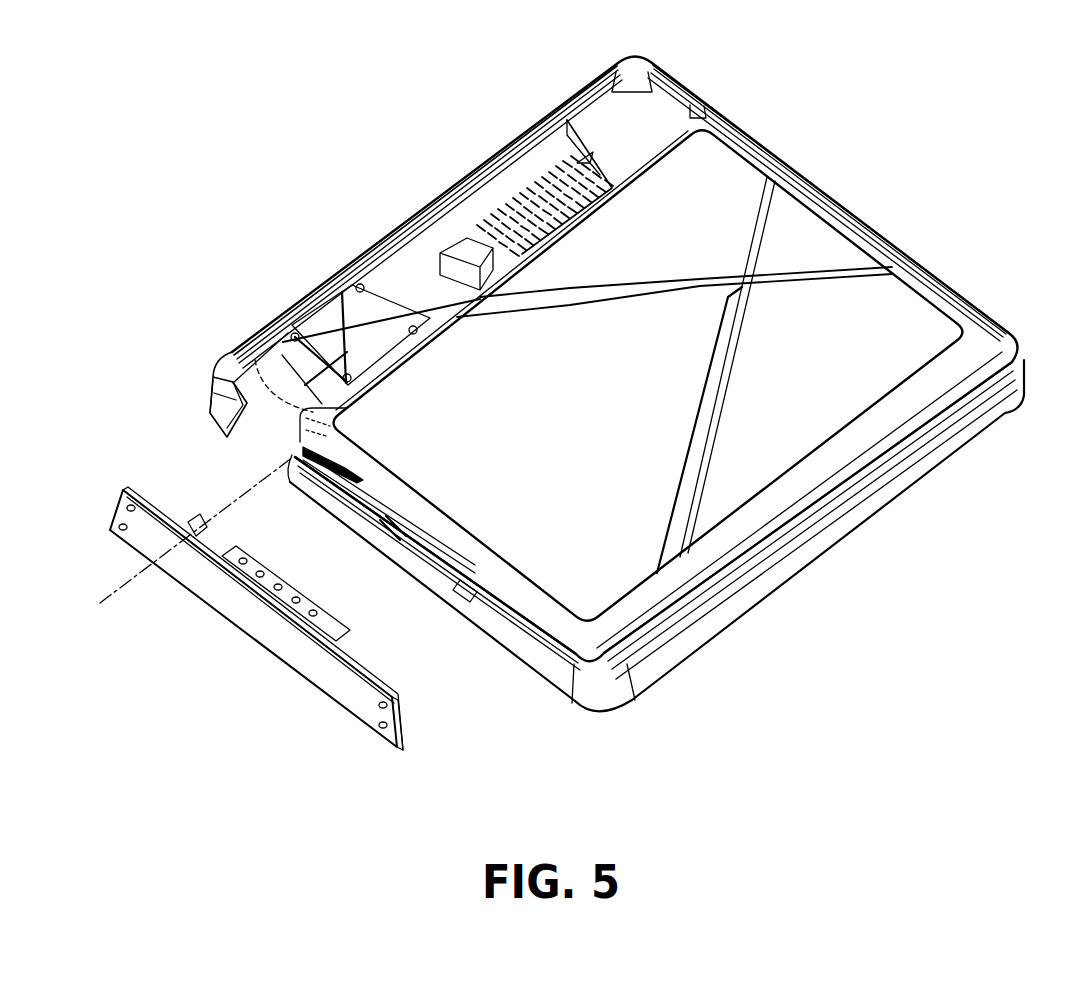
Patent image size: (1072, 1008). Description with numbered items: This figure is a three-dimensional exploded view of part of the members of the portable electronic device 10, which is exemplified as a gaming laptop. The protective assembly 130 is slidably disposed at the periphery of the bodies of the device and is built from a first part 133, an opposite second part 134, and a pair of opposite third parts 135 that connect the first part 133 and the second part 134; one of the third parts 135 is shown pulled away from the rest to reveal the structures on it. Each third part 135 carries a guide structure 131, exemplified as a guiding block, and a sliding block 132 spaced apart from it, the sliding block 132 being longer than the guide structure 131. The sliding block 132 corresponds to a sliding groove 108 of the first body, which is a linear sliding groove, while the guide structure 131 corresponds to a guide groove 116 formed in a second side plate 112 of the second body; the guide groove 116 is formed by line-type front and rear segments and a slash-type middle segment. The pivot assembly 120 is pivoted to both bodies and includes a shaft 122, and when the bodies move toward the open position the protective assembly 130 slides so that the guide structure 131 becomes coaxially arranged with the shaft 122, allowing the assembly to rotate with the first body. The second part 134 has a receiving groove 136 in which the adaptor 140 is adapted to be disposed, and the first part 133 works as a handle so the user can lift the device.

The portable electronic device 10 is at (836, 722).
The sliding groove 108 is at (360, 478).
The second side plate 112 is at (347, 508).
The guide groove 116 is at (385, 535).
The pivot assembly 120 is at (211, 396).
The shaft 122 is at (250, 337).
The protective assembly 130 is at (625, 368).
The guide structure 131 is at (190, 526).
The sliding block 132 is at (332, 630).
The first part 133 is at (770, 570).
The second part 134 is at (468, 172).
The third part 135 is at (867, 223).
The receiving groove 136 is at (572, 165).
The adaptor 140 is at (388, 287).